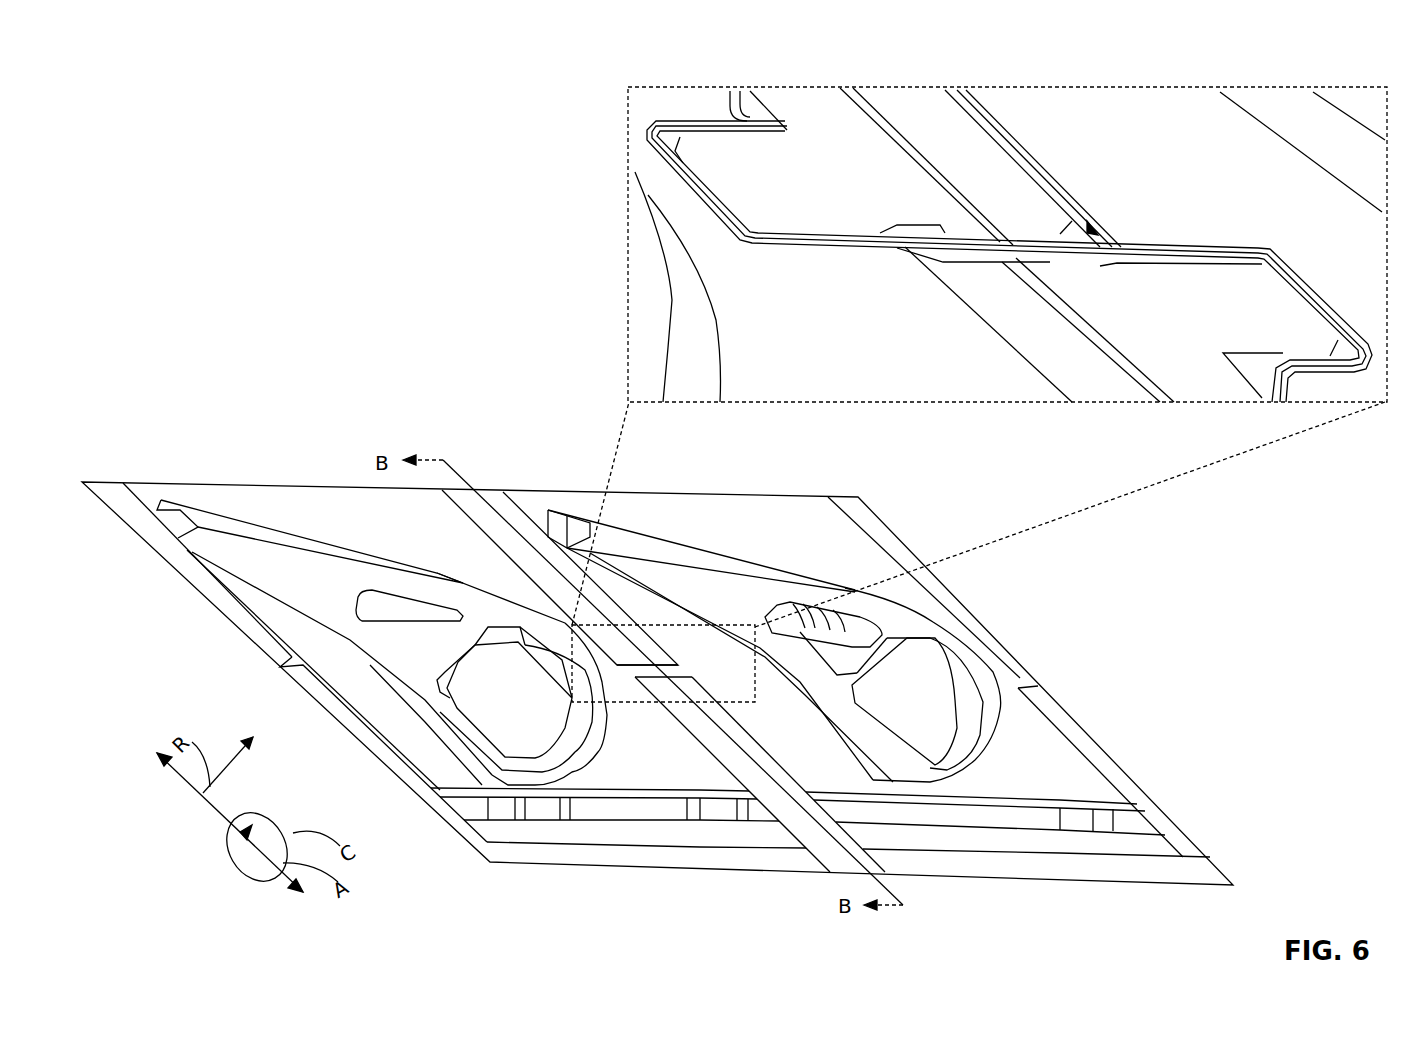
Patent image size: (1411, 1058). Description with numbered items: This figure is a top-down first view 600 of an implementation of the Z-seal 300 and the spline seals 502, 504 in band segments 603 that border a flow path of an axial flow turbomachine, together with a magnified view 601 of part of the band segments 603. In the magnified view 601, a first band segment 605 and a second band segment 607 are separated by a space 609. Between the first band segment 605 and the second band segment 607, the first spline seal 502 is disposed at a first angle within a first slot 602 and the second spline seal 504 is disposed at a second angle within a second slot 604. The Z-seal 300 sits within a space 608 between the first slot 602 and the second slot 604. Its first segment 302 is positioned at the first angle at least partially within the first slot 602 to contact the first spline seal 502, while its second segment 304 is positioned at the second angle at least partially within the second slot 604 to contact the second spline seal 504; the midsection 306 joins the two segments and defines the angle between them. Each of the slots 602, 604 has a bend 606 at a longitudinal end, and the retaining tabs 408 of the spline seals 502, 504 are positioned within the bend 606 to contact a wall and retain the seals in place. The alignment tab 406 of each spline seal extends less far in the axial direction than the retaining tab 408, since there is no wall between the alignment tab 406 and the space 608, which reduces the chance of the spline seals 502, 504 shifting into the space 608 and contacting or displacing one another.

The first view 600 is at (555, 75).
The magnified view 601 is at (1068, 84).
The first slot 602 is at (1075, 192).
The band segments 603 is at (493, 433).
The second slot 604 is at (1283, 395).
The first band segment 605 is at (177, 483).
The bend 606 is at (740, 118).
The second band segment 607 is at (673, 492).
The space 608 is at (683, 663).
The space 609 is at (885, 143).
The Z-seal 300 is at (1098, 225).
The first segment 302 is at (847, 240).
The second segment 304 is at (1222, 253).
The midsection 306 is at (920, 247).
The alignment tab 406 is at (945, 228).
The retaining tab 408 is at (785, 227).
The first spline seal 502 is at (477, 523).
The second spline seal 504 is at (705, 746).